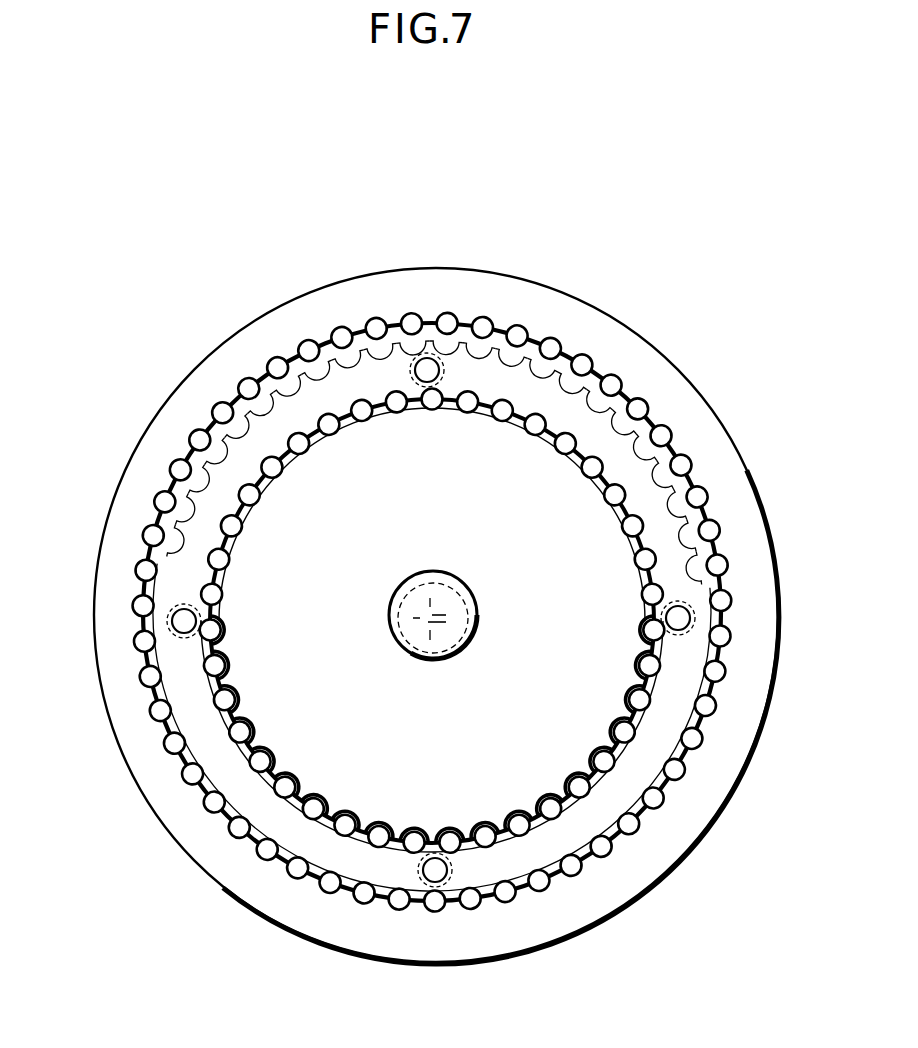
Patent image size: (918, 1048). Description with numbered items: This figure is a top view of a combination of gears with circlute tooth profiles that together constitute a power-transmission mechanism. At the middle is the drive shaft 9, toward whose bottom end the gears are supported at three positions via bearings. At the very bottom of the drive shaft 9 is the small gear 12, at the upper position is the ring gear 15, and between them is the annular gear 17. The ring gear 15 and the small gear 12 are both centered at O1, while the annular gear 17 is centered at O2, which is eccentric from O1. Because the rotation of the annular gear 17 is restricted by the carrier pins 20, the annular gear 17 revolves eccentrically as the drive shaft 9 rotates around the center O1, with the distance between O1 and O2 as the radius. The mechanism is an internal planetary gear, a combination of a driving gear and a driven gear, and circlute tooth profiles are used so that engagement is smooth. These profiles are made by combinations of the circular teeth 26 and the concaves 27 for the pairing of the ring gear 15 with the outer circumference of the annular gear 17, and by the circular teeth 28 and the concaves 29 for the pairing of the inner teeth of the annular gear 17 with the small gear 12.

The drive shaft 9 is at (392, 613).
The small gear 12 is at (560, 483).
The ring gear 15 is at (172, 812).
The annular gear 17 is at (668, 531).
The carrier pins 20 is at (430, 370).
The circular teeth 26 is at (343, 333).
The concaves 27 is at (298, 378).
The circular teeth 28 is at (377, 838).
The concaves 29 is at (327, 823).
The center O1 is at (434, 614).
The center O2 is at (432, 623).